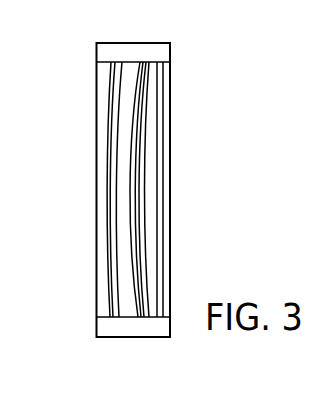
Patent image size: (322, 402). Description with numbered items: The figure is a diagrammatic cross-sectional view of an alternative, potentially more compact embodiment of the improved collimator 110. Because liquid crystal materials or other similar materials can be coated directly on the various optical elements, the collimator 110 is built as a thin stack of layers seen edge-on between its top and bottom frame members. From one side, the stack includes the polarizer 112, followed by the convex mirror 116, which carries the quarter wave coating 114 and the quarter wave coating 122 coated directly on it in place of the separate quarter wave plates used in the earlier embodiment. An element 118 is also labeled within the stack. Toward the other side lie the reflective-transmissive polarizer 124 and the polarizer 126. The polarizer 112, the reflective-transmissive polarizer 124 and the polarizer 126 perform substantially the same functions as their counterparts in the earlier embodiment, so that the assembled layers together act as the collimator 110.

The collimator 110 is at (193, 41).
The polarizer 112 is at (103, 190).
The quarter wave coating 114 is at (115, 268).
The convex mirror 116 is at (125, 115).
The fourth layer 118 is at (142, 72).
The quarter wave coating 122 is at (147, 302).
The reflective-transmissive polarizer 124 is at (155, 208).
The polarizer 126 is at (163, 155).